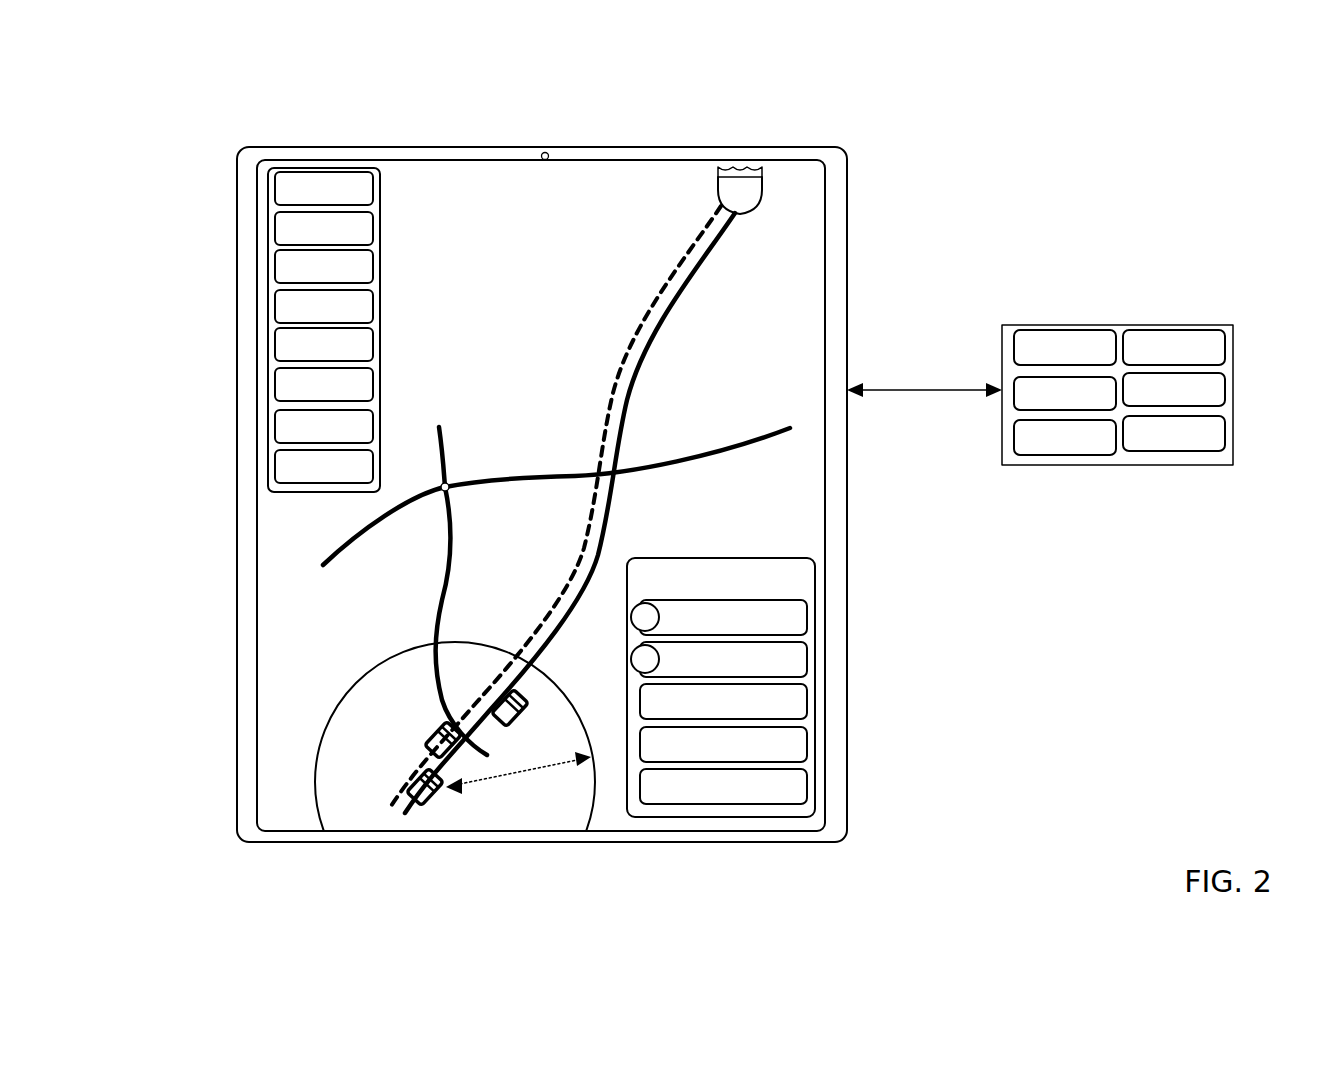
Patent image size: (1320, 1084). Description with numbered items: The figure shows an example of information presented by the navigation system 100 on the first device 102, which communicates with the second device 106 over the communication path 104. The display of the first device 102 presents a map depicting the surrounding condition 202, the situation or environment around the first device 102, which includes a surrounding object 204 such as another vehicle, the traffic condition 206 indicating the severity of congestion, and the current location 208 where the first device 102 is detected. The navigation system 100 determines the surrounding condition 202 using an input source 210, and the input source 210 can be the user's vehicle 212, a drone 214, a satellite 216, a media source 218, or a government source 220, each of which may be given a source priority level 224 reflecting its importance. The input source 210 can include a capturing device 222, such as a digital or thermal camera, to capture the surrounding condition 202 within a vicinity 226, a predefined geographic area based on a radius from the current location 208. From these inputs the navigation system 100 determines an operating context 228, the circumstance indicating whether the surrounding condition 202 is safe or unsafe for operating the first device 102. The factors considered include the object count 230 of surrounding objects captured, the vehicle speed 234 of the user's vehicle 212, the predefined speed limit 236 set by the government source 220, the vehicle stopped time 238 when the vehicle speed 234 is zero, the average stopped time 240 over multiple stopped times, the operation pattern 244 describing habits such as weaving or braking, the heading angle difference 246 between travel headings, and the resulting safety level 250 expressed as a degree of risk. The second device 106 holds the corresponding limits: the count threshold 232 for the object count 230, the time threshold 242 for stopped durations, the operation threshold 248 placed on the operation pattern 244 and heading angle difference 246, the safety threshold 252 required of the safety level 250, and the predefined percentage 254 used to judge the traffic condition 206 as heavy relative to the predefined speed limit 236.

The navigation system 100 is at (283, 127).
The first device 102 is at (754, 148).
The communication path 104 is at (893, 390).
The second device 106 is at (1133, 322).
The surrounding condition 202 is at (335, 712).
The surrounding object 204 is at (588, 833).
The traffic condition 206 is at (283, 265).
The current location 208 is at (417, 795).
The input source 210 is at (770, 557).
The user's vehicle 212 is at (795, 632).
The drone 214 is at (795, 674).
The satellite 216 is at (795, 716).
The media source 218 is at (795, 760).
The government source 220 is at (795, 802).
The capturing device 222 is at (547, 152).
The source priority level 224 is at (653, 660).
The vicinity 226 is at (480, 780).
The operating context 228 is at (798, 265).
The object count 230 is at (292, 187).
The count threshold 232 is at (1043, 359).
The vehicle speed 234 is at (279, 227).
The predefined speed limit 236 is at (283, 307).
The vehicle stopped time 238 is at (283, 346).
The average stopped time 240 is at (283, 386).
The time threshold 242 is at (1043, 404).
The operation pattern 244 is at (283, 428).
The heading angle difference 246 is at (1043, 448).
The operation threshold 248 is at (1152, 356).
The safety level 250 is at (291, 472).
The safety threshold 252 is at (1152, 400).
The predefined percentage 254 is at (1152, 443).